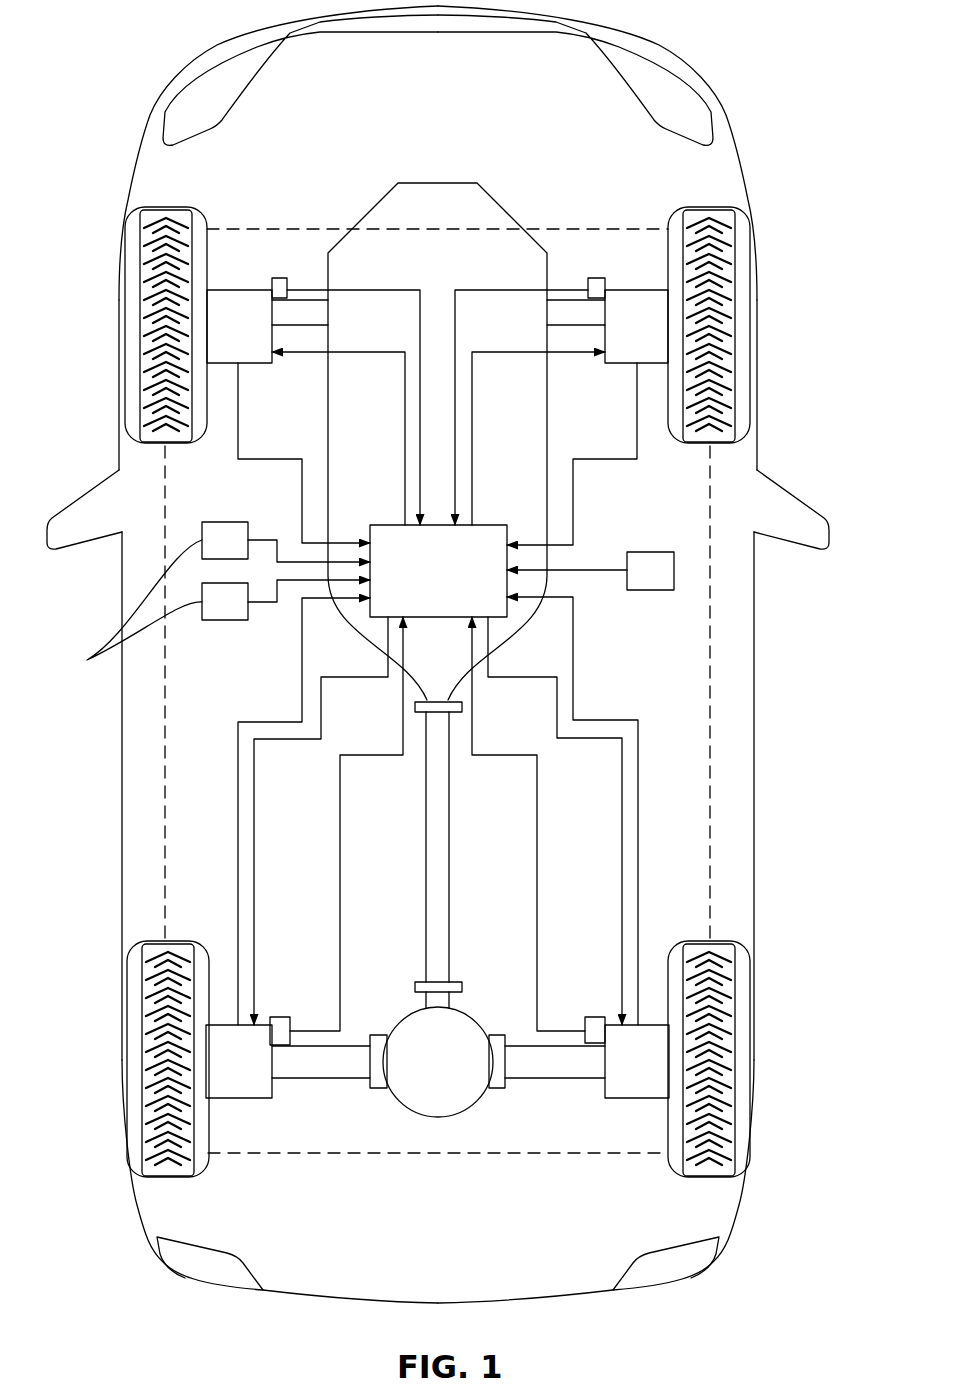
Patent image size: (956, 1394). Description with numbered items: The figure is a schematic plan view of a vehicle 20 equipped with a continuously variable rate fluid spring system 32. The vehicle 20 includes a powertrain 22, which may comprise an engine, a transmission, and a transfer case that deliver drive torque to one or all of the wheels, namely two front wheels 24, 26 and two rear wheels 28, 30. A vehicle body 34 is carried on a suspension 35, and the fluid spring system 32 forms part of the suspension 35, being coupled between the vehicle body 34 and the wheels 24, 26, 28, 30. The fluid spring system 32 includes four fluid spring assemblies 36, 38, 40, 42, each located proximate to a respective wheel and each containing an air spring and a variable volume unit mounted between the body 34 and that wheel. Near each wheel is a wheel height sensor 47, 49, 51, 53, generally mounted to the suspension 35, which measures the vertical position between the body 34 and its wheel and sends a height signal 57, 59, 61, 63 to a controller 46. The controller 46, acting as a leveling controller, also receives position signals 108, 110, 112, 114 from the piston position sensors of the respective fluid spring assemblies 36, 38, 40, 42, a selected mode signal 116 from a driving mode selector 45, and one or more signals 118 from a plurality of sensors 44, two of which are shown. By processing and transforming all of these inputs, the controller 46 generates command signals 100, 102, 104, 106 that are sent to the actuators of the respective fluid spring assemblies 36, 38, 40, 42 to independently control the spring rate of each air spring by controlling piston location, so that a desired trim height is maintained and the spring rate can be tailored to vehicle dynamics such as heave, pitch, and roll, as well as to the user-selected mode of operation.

The vehicle 20 is at (158, 50).
The powertrain 22 is at (514, 206).
The front wheel 24 is at (125, 288).
The front wheel 26 is at (753, 290).
The rear wheel 28 is at (126, 1112).
The rear wheel 30 is at (750, 1112).
The fluid spring system 32 is at (283, 225).
The vehicle body 34 is at (755, 750).
The suspension 35 is at (577, 332).
The fluid spring assembly 36 is at (252, 341).
The fluid spring assembly 38 is at (652, 341).
The fluid spring assembly 40 is at (253, 1076).
The fluid spring assembly 42 is at (652, 1076).
The sensors 44 is at (128, 610).
The driving mode selector 45 is at (650, 592).
The controller 46 is at (453, 586).
The wheel height sensor 47 is at (281, 278).
The wheel height sensor 49 is at (598, 278).
The wheel height sensor 51 is at (285, 1015).
The wheel height sensor 53 is at (590, 1015).
The height signal 57 is at (398, 290).
The height signal 59 is at (523, 290).
The height signal 61 is at (342, 910).
The height signal 63 is at (536, 910).
The command signal 100 is at (402, 428).
The command signal 102 is at (474, 428).
The command signal 104 is at (256, 862).
The command signal 106 is at (622, 850).
The position signal 108 is at (240, 410).
The position signal 110 is at (637, 410).
The position signal 112 is at (238, 870).
The position signal 114 is at (575, 702).
The selected mode signal 116 is at (595, 568).
The sensor signals 118 is at (262, 540).